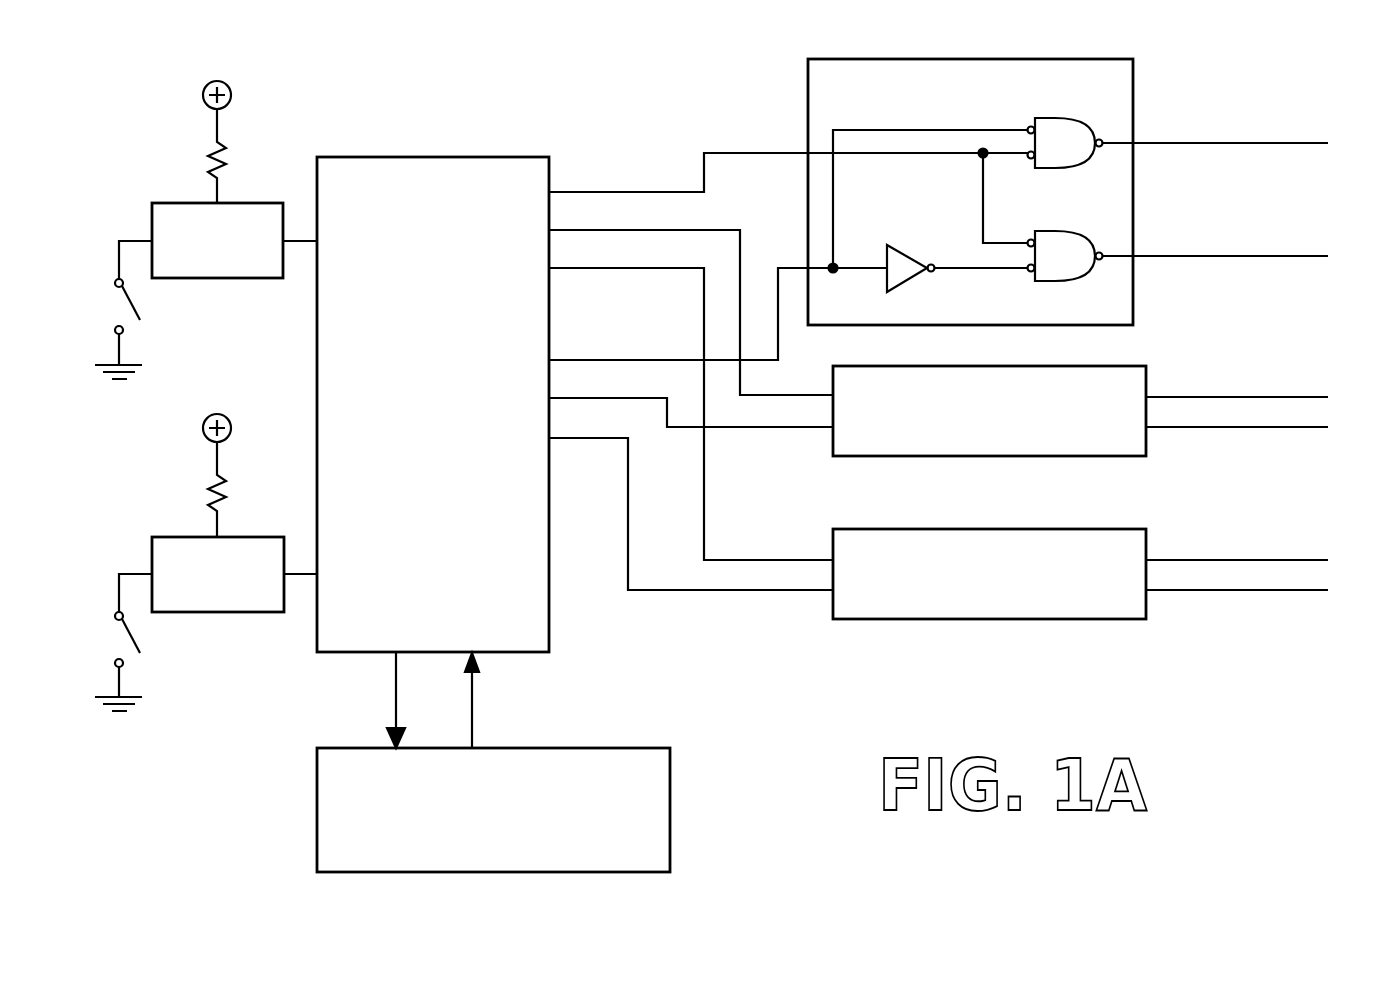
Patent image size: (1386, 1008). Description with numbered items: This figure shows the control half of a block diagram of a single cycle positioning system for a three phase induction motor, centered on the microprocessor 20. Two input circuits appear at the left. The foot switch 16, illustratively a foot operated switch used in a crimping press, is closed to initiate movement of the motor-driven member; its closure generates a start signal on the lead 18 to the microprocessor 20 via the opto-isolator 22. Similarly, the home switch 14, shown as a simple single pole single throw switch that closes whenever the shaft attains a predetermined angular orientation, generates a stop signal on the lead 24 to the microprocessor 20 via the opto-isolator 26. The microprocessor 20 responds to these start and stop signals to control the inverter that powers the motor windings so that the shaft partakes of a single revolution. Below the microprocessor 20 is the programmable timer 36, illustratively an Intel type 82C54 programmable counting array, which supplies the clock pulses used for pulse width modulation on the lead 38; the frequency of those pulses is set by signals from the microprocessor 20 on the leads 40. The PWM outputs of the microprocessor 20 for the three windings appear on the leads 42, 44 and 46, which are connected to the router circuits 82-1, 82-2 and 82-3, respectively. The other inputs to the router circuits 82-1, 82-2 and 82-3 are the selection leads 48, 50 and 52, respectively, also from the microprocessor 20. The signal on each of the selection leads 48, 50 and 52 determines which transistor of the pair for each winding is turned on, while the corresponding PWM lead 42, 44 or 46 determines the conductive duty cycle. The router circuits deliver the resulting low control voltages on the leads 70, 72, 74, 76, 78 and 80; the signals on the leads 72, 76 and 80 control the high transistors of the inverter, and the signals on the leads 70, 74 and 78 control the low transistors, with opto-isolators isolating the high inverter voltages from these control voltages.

The home switch 14 is at (120, 645).
The foot switch 16 is at (118, 308).
The lead 18 is at (303, 235).
The microprocessor 20 is at (450, 155).
The opto-isolator 22 is at (263, 282).
The lead 24 is at (307, 567).
The opto-isolator 26 is at (243, 612).
The programmable timer 36 is at (672, 782).
The lead 38 is at (474, 705).
The leads 40 is at (394, 695).
The PWM output lead 42 is at (622, 192).
The PWM output lead 44 is at (702, 228).
The PWM output lead 46 is at (590, 272).
The selection lead 48 is at (633, 358).
The selection lead 50 is at (645, 400).
The selection lead 52 is at (597, 440).
The lead 70 is at (1285, 142).
The lead 72 is at (1288, 253).
The lead 74 is at (1285, 395).
The lead 76 is at (1315, 428).
The lead 78 is at (1305, 558).
The lead 80 is at (1282, 592).
The router circuit 82-1 is at (1135, 83).
The router circuit 82-2 is at (1148, 368).
The router circuit 82-3 is at (1100, 622).